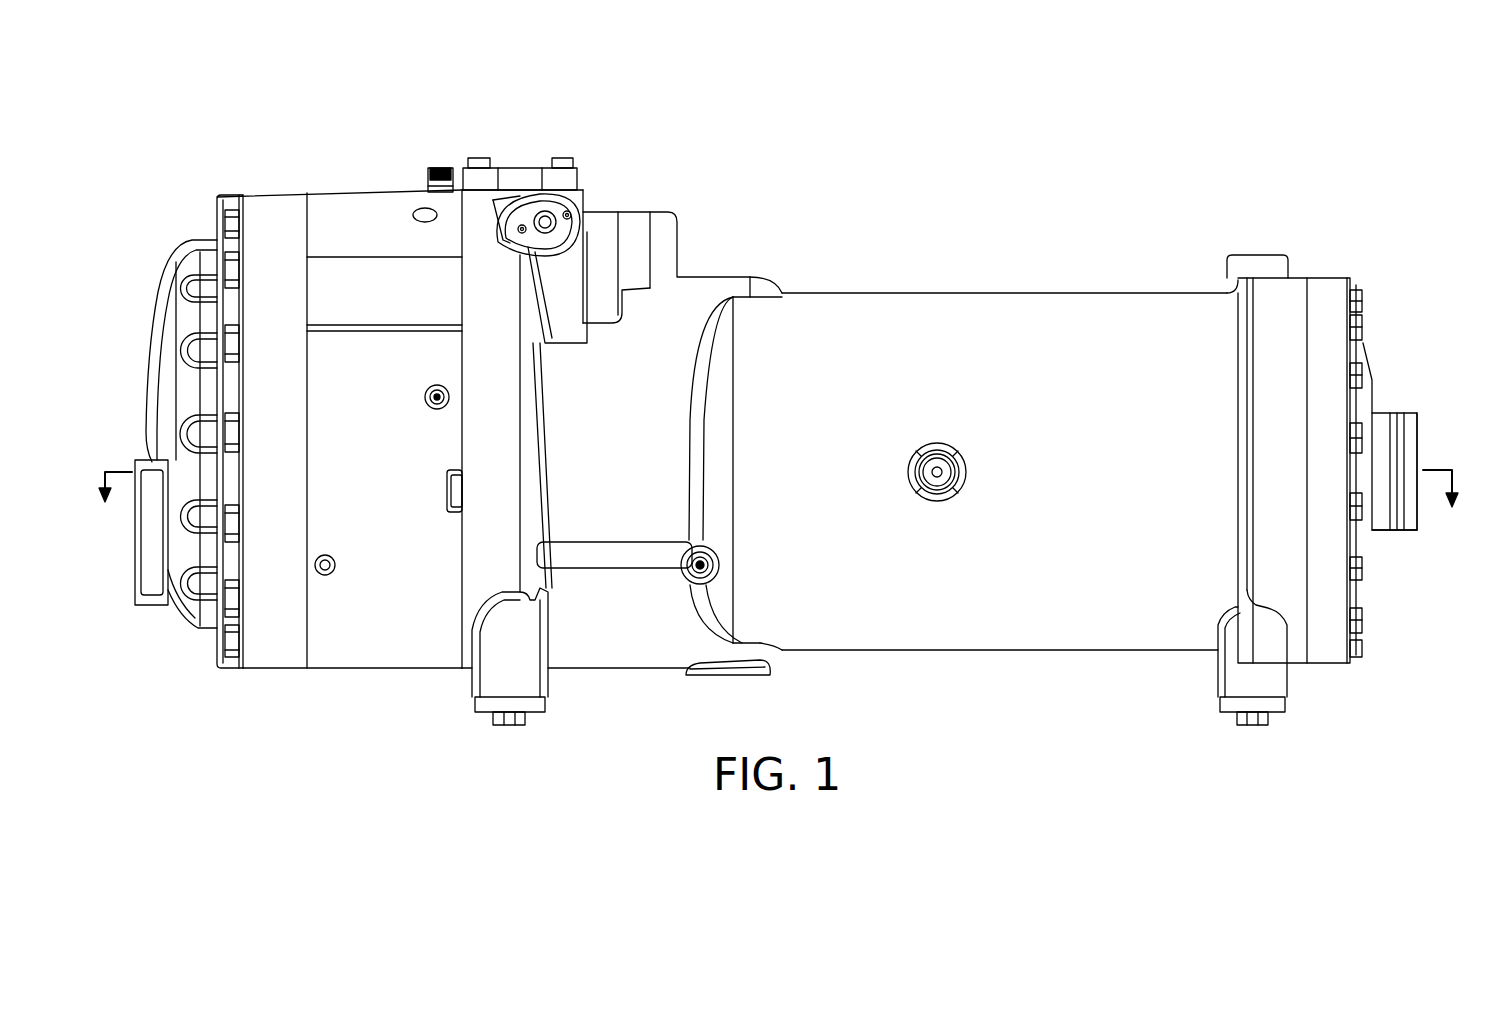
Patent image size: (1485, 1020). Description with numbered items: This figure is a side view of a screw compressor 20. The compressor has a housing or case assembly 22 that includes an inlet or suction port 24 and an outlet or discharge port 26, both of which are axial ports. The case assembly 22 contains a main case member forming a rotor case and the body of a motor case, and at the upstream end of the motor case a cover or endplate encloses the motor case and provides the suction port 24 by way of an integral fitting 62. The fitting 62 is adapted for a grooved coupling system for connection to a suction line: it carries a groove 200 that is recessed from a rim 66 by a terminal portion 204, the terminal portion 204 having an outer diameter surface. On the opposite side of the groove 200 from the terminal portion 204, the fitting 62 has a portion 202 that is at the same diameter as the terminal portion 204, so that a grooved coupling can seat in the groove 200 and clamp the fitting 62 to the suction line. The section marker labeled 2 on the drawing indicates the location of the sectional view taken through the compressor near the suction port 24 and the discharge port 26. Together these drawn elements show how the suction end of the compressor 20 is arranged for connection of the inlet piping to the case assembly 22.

The screw compressor 20 is at (265, 122).
The case assembly 22 is at (1008, 236).
The discharge port 26 is at (121, 590).
The suction port 24 is at (1428, 530).
The fitting 62 is at (1398, 545).
The rim 66 is at (1419, 438).
The groove 200 is at (1393, 403).
The portion 202 is at (1374, 533).
The terminal portion 204 is at (1404, 412).
The section line 2- 2 is at (777, 504).